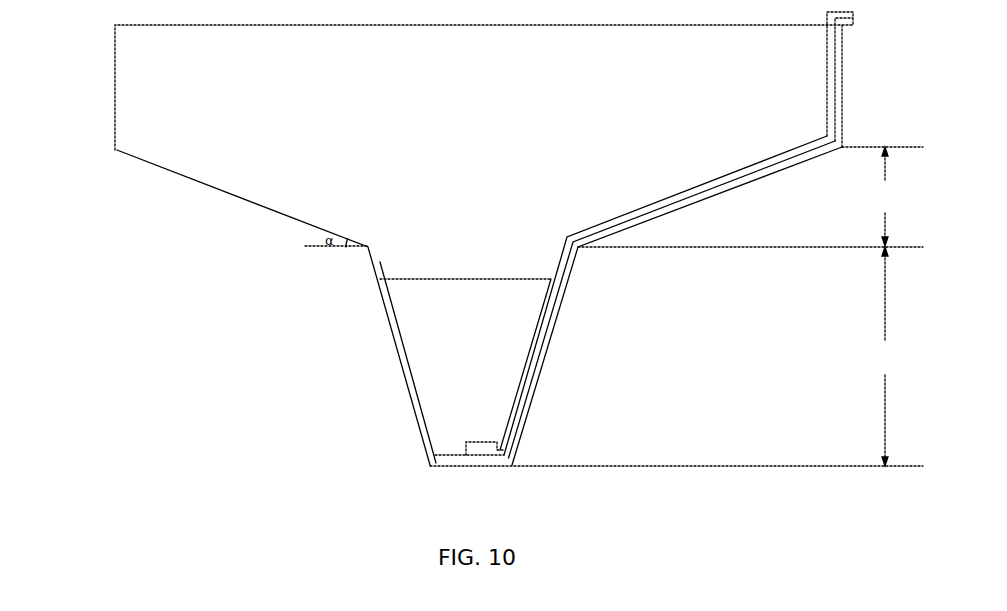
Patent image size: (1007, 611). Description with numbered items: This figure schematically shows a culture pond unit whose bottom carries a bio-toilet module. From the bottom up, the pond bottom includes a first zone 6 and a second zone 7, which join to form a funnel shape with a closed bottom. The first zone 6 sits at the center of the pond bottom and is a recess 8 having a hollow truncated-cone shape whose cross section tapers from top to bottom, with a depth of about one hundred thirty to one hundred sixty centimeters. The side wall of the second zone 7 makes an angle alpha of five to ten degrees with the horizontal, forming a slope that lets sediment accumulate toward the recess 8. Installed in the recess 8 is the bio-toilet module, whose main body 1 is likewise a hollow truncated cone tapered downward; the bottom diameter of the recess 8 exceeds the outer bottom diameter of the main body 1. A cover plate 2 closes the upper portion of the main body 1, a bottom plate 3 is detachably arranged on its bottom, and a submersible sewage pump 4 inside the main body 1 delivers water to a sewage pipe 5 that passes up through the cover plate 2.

The main body 1 is at (453, 330).
The cover plate 2 is at (515, 278).
The bottom plate 3 is at (455, 455).
The submersible sewage pump 4 is at (468, 442).
The sewage pipe 5 is at (535, 328).
The first zone 6 is at (885, 356).
The second zone 7 is at (750, 197).
The recess 8 is at (404, 372).